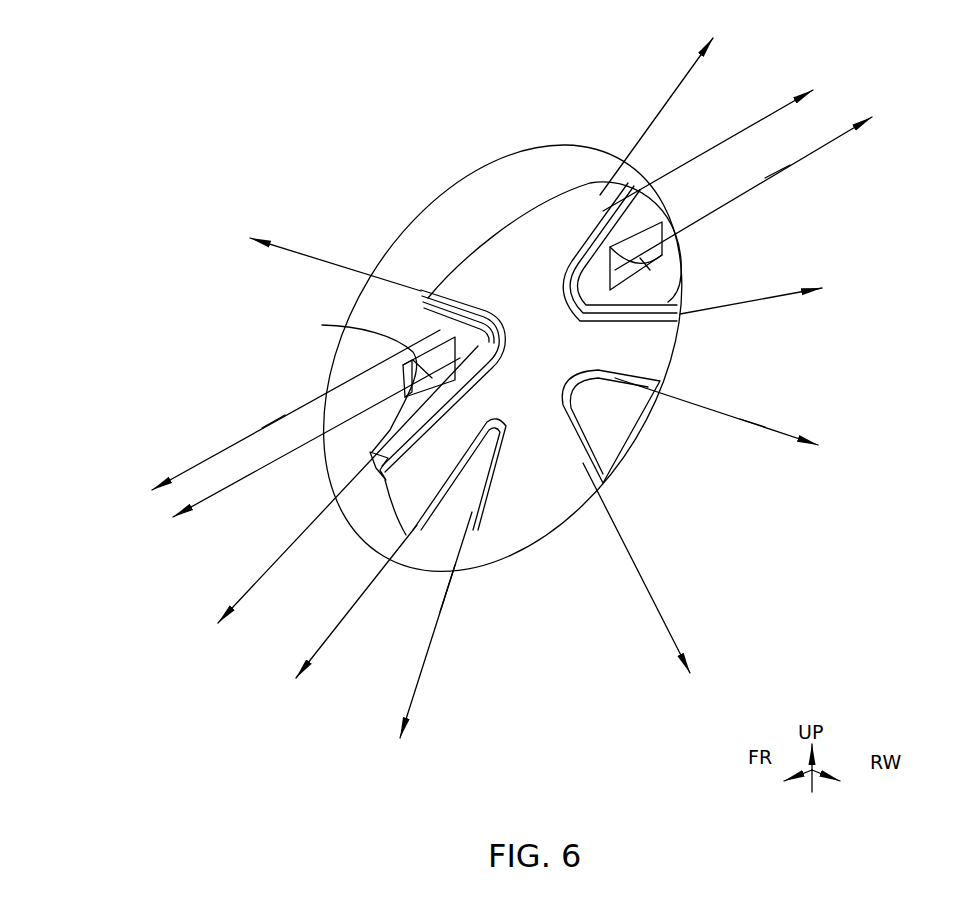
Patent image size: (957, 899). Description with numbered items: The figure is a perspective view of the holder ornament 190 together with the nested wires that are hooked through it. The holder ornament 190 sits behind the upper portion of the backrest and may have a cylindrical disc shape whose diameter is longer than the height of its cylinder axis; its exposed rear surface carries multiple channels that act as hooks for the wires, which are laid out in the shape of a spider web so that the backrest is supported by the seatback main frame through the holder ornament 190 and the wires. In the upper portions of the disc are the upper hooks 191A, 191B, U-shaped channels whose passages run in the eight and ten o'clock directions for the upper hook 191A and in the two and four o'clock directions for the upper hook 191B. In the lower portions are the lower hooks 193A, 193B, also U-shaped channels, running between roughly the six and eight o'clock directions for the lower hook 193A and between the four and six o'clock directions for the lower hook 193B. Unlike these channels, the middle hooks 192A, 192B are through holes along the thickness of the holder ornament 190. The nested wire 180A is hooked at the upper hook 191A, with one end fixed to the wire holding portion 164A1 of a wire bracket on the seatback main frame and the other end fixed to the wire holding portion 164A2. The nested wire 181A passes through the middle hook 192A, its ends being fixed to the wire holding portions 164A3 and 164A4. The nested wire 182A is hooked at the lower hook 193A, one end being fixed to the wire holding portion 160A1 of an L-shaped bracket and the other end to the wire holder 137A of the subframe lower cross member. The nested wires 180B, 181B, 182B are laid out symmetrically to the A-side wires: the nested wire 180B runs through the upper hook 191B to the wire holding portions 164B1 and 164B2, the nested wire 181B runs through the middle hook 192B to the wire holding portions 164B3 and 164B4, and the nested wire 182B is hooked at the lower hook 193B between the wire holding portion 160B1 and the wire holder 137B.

The holder ornament 190 is at (497, 188).
The nested wire 180A is at (352, 265).
The nested wire 180B is at (663, 108).
The upper hook 191A is at (433, 283).
The upper hook 191B is at (593, 228).
The middle hook 192A is at (402, 376).
The middle hook 192B is at (687, 277).
The lower hook 193A is at (480, 550).
The lower hook 193B is at (578, 463).
The wire holding portion 164A1 is at (293, 260).
The wire holding portion 164A2 is at (325, 499).
The wire holding portion 164A3 is at (259, 420).
The wire holding portion 164A4 is at (290, 455).
The wire holding portion 164B1 is at (670, 105).
The wire holding portion 164B2 is at (786, 294).
The wire holding portion 164B3 is at (737, 137).
The wire holding portion 164B4 is at (779, 186).
The wire holding portion 160A1 is at (333, 617).
The wire holding portion 160B1 is at (751, 420).
The wire holder 137A is at (421, 641).
The wire holder 137B is at (652, 581).
The nested wire 181A is at (272, 422).
The nested wire 181B is at (780, 177).
The nested wire 182A is at (447, 603).
The nested wire 182B is at (752, 422).